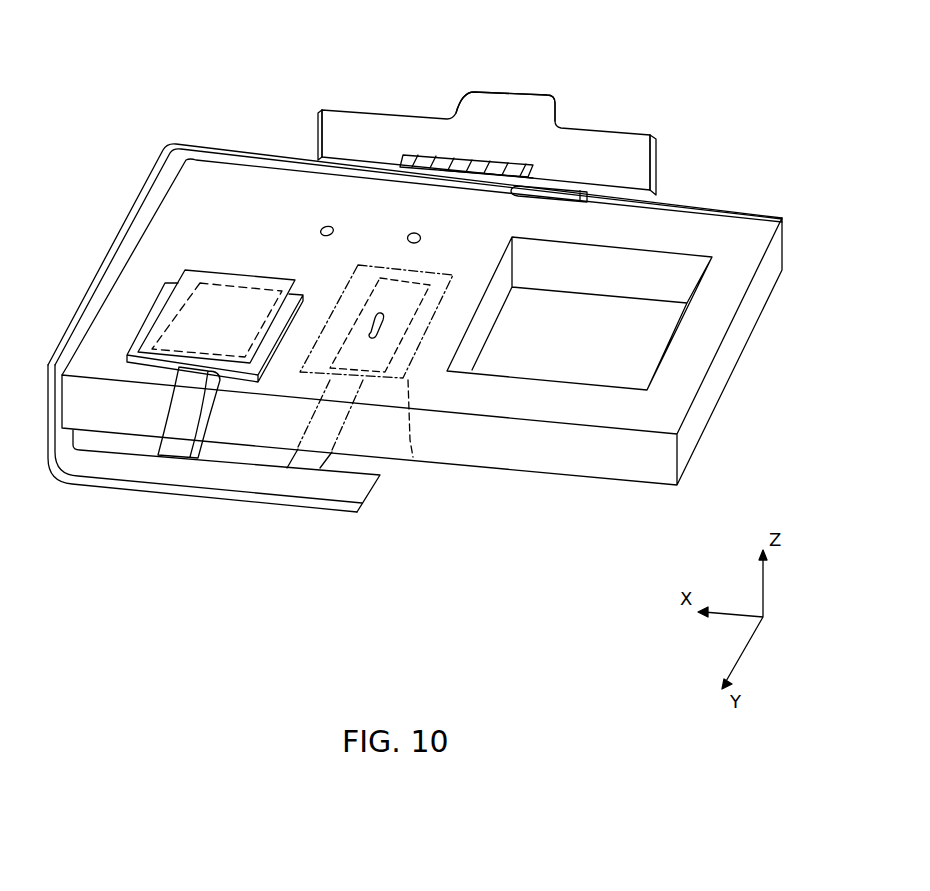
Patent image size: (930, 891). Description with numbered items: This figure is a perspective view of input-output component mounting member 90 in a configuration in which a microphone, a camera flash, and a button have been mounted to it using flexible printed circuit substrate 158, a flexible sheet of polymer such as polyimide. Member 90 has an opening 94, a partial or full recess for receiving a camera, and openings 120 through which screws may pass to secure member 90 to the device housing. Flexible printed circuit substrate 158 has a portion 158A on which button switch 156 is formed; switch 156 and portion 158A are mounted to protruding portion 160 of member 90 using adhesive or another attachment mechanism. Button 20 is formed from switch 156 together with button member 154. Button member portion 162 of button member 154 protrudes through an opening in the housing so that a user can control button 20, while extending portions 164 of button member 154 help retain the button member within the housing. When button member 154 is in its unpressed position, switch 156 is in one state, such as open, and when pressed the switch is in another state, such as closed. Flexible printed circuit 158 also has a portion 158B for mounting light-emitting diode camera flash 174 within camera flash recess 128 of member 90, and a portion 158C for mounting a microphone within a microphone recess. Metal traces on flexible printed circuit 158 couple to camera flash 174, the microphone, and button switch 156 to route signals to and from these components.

The button 20 is at (446, 40).
The input-output component mounting member 90 is at (760, 293).
The opening 94 is at (641, 310).
The openings 120 is at (408, 238).
The camera flash recess 128 is at (163, 293).
The button member 154 is at (670, 100).
The button switch 156 is at (419, 157).
The flexible printed circuit substrate 158 is at (288, 158).
The flexible printed circuit substrate portion 158A is at (486, 176).
The flexible printed circuit portion 158B is at (230, 380).
The flexible printed circuit portion 158C is at (413, 457).
The protruding portion 160 is at (453, 183).
The button member portion 162 is at (547, 95).
The extending portions 164 is at (363, 110).
The light-emitting diode camera flash 174 is at (238, 290).